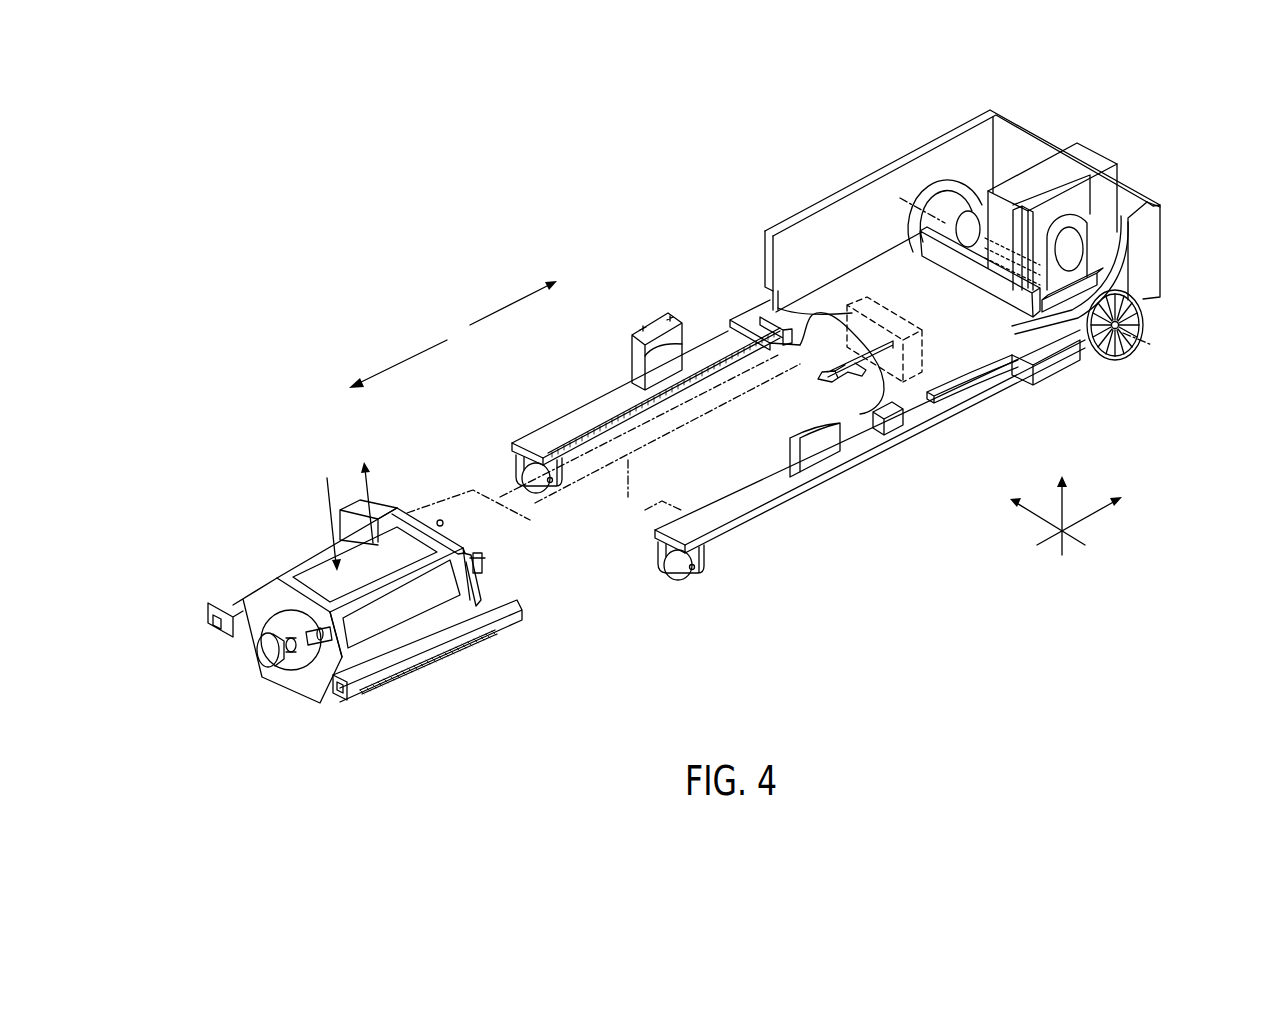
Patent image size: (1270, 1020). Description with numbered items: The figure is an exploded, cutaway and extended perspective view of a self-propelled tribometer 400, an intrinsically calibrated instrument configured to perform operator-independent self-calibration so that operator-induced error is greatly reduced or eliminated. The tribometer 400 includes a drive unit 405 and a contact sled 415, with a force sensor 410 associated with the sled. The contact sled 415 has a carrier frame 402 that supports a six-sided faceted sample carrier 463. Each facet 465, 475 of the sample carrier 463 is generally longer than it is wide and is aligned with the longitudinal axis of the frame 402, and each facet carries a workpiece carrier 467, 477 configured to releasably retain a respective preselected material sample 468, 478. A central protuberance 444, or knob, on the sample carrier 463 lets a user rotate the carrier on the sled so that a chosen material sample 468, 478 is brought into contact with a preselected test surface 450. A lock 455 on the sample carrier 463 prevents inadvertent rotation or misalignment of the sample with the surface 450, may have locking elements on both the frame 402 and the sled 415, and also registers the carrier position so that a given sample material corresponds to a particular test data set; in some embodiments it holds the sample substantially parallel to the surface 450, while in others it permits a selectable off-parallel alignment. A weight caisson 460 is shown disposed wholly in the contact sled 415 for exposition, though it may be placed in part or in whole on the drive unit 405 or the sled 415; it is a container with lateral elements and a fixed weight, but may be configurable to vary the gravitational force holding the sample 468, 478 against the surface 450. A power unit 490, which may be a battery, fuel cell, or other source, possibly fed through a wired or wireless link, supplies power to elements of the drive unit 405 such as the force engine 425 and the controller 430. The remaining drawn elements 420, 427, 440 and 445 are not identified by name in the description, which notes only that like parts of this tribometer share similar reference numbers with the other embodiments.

The self-propelled tribometer 400 is at (552, 225).
The carrier frame 402 is at (786, 504).
The drive unit 405 is at (1163, 273).
The force sensor 410 is at (906, 323).
The contact sled 415 is at (368, 700).
The pulley 420 is at (1068, 233).
The force engine 425 is at (1035, 178).
The motor 427 is at (982, 210).
The controller 430 is at (958, 270).
The curved guide 440 is at (1115, 180).
The central protuberance 444 is at (264, 654).
The frame corner 445 is at (1145, 198).
The preselected test surface 450 is at (537, 713).
The lock 455 is at (290, 590).
The weight caisson 460 is at (300, 660).
The sample carrier 463 is at (330, 698).
The facet 465 is at (443, 532).
The workpiece carrier 467 is at (300, 584).
The preselected material sample 468 is at (377, 566).
The facet 475 is at (478, 605).
The workpiece carrier 477 is at (471, 563).
The preselected material sample 478 is at (415, 613).
The power unit 490 is at (1025, 329).